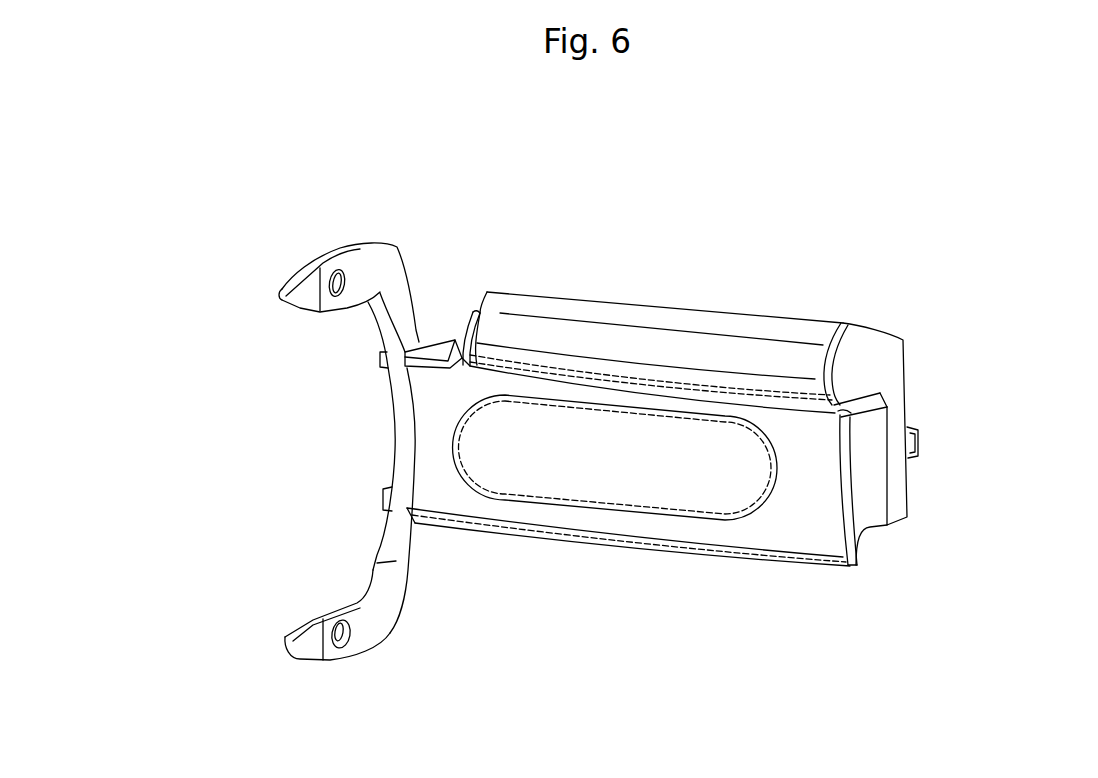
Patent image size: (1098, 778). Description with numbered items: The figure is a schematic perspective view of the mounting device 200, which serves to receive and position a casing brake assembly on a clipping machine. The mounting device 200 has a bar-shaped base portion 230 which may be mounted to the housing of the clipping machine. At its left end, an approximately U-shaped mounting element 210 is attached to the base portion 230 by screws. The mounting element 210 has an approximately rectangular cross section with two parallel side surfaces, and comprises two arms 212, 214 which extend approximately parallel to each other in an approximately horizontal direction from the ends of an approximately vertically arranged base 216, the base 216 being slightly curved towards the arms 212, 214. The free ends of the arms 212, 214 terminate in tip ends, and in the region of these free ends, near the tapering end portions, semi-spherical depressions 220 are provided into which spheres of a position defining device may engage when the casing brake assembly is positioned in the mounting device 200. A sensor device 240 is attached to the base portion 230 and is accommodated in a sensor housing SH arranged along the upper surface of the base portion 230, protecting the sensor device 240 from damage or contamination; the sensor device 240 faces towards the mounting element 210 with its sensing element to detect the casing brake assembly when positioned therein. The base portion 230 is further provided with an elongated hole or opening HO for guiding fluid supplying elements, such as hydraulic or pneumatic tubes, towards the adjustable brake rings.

The mounting device 200 is at (923, 245).
The U-shaped mounting element 210 is at (400, 237).
The arm 212 is at (345, 260).
The arm 214 is at (378, 630).
The base 216 is at (403, 432).
The semi-spherical depressions 220 is at (338, 632).
The base portion 230 is at (862, 498).
The sensor device 240 is at (476, 311).
The sensor housing SH is at (660, 348).
The elongated hole or opening HO is at (733, 497).